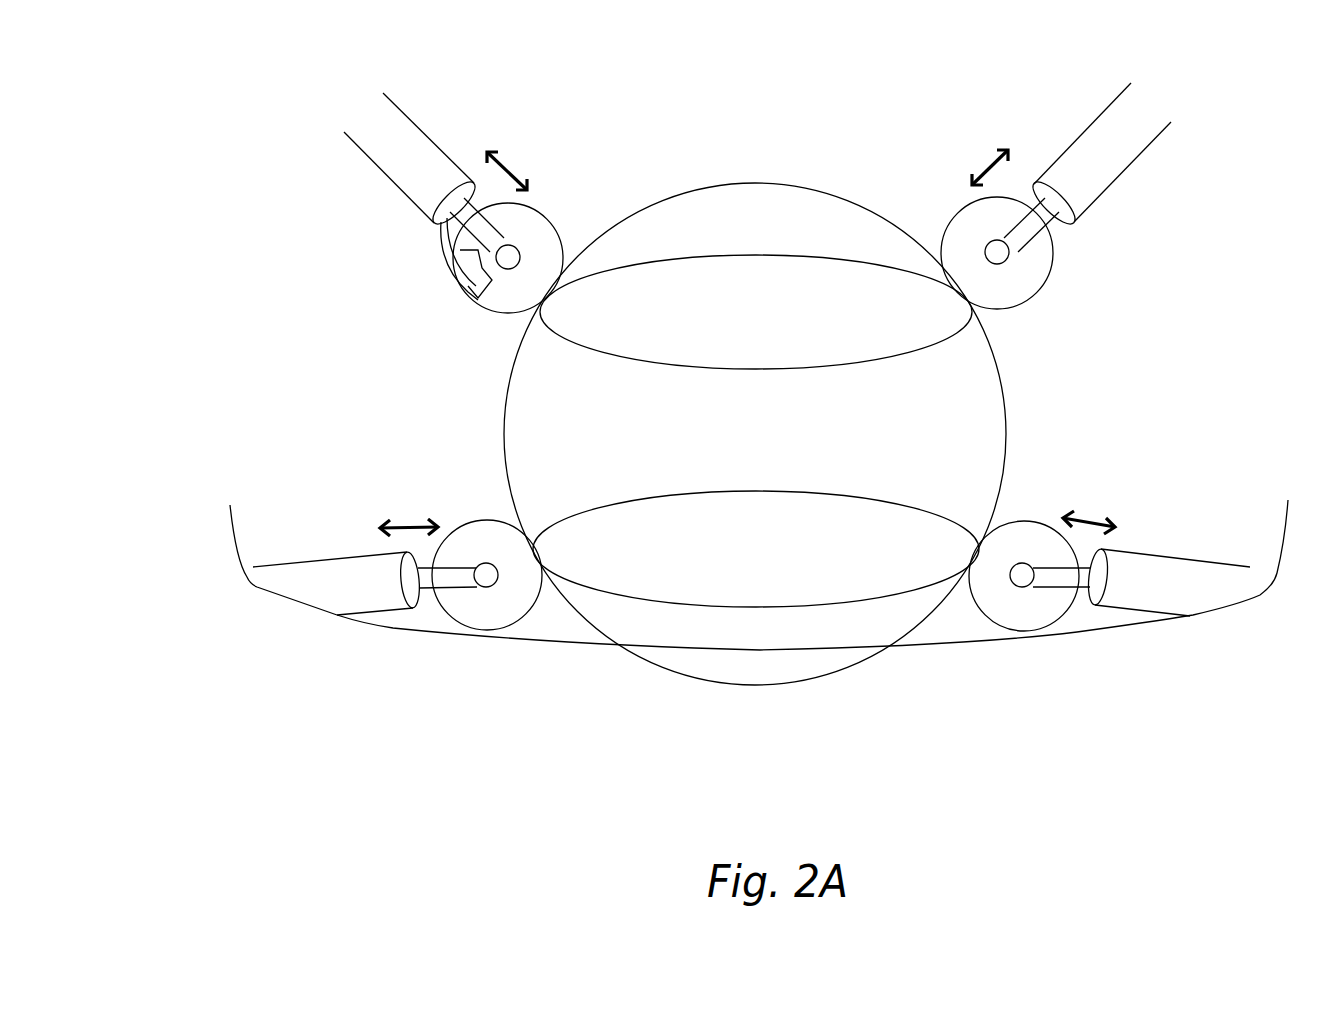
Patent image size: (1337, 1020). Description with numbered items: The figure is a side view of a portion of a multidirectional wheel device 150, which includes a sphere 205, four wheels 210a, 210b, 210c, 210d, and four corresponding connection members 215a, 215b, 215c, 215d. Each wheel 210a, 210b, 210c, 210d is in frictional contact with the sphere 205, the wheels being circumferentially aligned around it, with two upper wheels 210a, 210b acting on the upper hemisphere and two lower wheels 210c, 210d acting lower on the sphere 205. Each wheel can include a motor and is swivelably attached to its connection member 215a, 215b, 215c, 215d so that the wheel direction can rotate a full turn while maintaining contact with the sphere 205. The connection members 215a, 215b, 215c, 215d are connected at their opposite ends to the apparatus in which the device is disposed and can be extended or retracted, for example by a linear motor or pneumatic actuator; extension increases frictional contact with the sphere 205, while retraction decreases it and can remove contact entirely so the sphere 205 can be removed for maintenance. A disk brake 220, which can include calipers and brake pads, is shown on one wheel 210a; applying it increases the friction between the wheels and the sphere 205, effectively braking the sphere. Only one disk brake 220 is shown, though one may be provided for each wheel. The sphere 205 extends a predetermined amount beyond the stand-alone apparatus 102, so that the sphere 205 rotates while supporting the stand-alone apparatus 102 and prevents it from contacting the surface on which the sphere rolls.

The multidirectional wheel device 150 is at (233, 67).
The stand-alone apparatus 102 is at (395, 630).
The sphere 205 is at (702, 187).
The wheel 210a is at (537, 210).
The wheel 210b is at (970, 205).
The wheel 210c is at (492, 520).
The wheel 210d is at (1022, 523).
The connection member 215a is at (443, 147).
The connection member 215b is at (1097, 195).
The connection member 215c is at (1142, 553).
The connection member 215d is at (357, 553).
The disk brake 220 is at (467, 300).